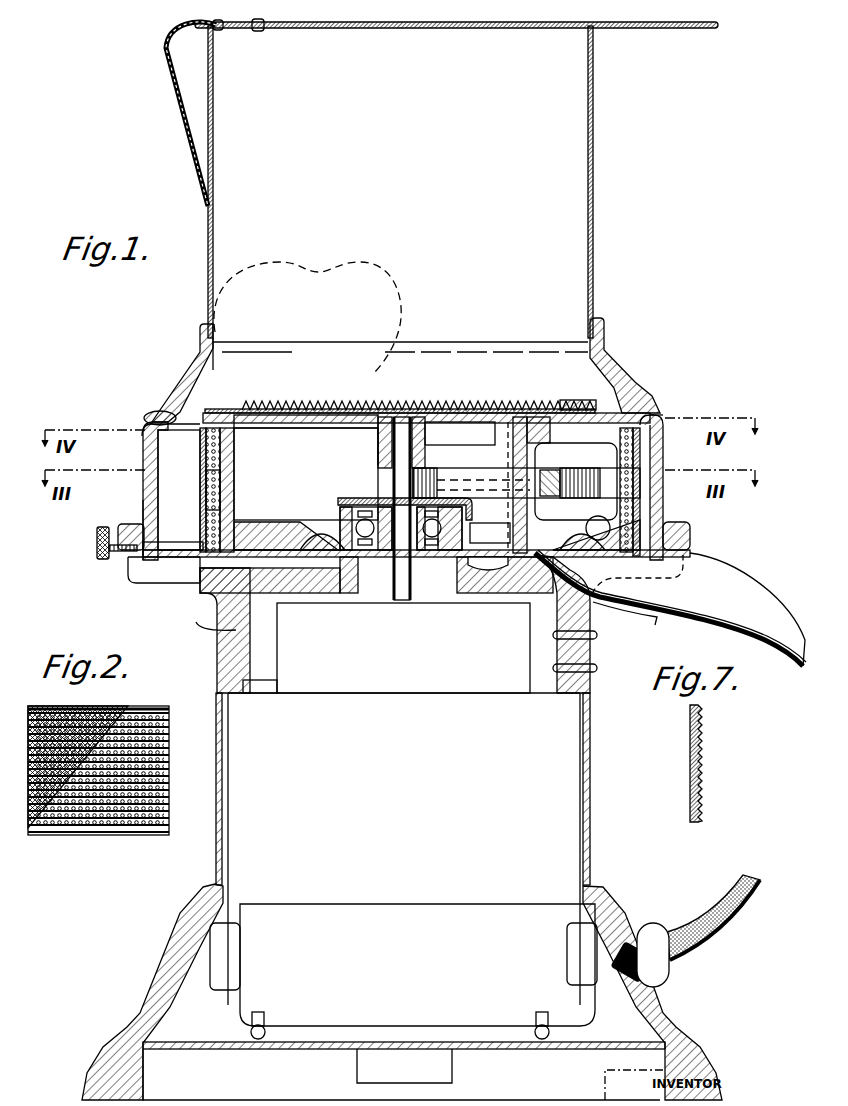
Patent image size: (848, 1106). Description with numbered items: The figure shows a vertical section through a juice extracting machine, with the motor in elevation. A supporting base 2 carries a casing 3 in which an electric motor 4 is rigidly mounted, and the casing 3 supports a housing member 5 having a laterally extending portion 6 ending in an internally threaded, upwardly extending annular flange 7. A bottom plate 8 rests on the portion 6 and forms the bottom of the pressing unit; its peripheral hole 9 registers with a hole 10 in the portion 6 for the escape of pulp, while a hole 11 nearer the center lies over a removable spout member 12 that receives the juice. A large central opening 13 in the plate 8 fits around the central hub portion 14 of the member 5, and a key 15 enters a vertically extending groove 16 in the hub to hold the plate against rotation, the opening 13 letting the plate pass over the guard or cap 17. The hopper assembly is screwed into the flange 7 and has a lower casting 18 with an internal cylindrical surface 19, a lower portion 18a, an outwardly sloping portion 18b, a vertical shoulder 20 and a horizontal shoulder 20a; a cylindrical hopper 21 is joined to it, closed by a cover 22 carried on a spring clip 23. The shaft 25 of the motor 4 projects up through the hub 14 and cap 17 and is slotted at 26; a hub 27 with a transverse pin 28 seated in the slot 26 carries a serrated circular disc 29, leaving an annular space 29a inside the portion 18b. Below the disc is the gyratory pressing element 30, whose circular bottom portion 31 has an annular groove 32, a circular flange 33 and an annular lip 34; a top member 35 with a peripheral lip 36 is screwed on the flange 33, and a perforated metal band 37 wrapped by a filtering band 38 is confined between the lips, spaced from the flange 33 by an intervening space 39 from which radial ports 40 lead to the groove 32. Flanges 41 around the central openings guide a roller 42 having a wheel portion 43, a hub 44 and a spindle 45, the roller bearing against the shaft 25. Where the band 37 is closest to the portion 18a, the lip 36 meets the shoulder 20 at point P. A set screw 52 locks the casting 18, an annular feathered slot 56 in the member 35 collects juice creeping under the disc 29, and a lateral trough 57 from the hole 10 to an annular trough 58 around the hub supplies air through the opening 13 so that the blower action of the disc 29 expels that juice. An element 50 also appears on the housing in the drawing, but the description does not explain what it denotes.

In FIG. 1, the supporting base 2 is at (182, 922).
In FIG. 1, the casing 3 is at (592, 790).
In FIG. 1, the electric motor 4 is at (538, 768).
In FIG. 1, the housing member 5 is at (222, 660).
In FIG. 1, the laterally extending portion 6 is at (130, 580).
In FIG. 1, the annular flange 7 is at (130, 530).
In FIG. 1, the bottom plate 8 is at (196, 565).
In FIG. 1, the hole 9 is at (164, 552).
In FIG. 1, the hole 10 is at (162, 583).
In FIG. 1, the hole 11 is at (566, 552).
In FIG. 1, the spout member 12 is at (726, 606).
In FIG. 1, the central opening 13 is at (362, 552).
In FIG. 1, the central hub portion 14 is at (395, 586).
In FIG. 1, the key 15 is at (464, 552).
In FIG. 1, the vertically extending groove 16 is at (470, 535).
In FIG. 1, the guard or cap 17 is at (385, 500).
In FIG. 1, the lower casting 18 is at (160, 418).
In FIG. 1, the lower portion 18a is at (143, 446).
In FIG. 1, the outwardly sloping portion 18b is at (196, 382).
In FIG. 1, the internal cylindrical surface 19 is at (158, 458).
In FIG. 1, the vertical shoulder 20 is at (150, 420).
In FIG. 1, the horizontal shoulder 20a is at (163, 412).
In FIG. 1, the cylindrical hopper 21 is at (594, 212).
In FIG. 1, the cover 22 is at (409, 29).
In FIG. 1, the spring clip 23 is at (183, 118).
In FIG. 1, the shaft 25 is at (460, 433).
In FIG. 1, the slot 26 is at (405, 410).
In FIG. 1, the hub 27 is at (444, 410).
In FIG. 1, the transverse pin 28 is at (378, 442).
In FIG. 1, the circular disc 29 is at (483, 412).
In FIG. 1, the annular space 29a is at (212, 410).
In FIG. 1, the gyratory pressing element 30 is at (425, 474).
In FIG. 1, the circular bottom portion 31 is at (318, 540).
In FIG. 1, the annular groove 32 is at (598, 550).
In FIG. 1, the circular flange 33 is at (236, 482).
In FIG. 1, the annular lip 34 is at (208, 574).
In FIG. 2, the annular lip 34 is at (122, 835).
In FIG. 1, the top member 35 is at (308, 428).
In FIG. 1, the peripheral lip 36 is at (201, 440).
In FIG. 2, the peripheral lip 36 is at (148, 708).
In FIG. 1, the perforated metal band 37 is at (210, 482).
In FIG. 2, the perforated metal band 37 is at (169, 748).
In FIG. 7, the perforated metal band 37 is at (704, 760).
In FIG. 1, the filtering band 38 is at (640, 444).
In FIG. 2, the filtering band 38 is at (90, 716).
In FIG. 1, the intervening space 39 is at (210, 500).
In FIG. 2, the intervening space 39 is at (99, 768).
In FIG. 1, the radial ports 40 is at (270, 510).
In FIG. 1, the flanges 41 is at (330, 535).
In FIG. 1, the roller 42 is at (575, 472).
In FIG. 1, the wheel portion 43 is at (448, 484).
In FIG. 1, the hub 44 is at (528, 455).
In FIG. 1, the spindle 45 is at (530, 414).
In FIG. 1, the clip 50 is at (196, 628).
In FIG. 1, the set screw 52 is at (96, 548).
In FIG. 1, the annular feathered slot 56 is at (272, 408).
In FIG. 1, the lateral trough 57 is at (328, 565).
In FIG. 1, the annular trough 58 is at (496, 570).
In FIG. 1, the point P is at (656, 418).